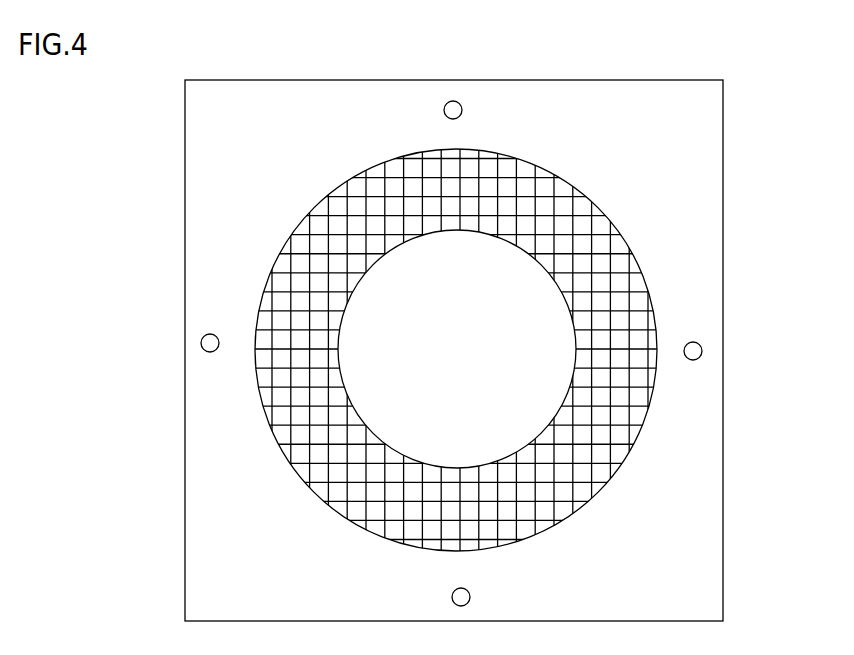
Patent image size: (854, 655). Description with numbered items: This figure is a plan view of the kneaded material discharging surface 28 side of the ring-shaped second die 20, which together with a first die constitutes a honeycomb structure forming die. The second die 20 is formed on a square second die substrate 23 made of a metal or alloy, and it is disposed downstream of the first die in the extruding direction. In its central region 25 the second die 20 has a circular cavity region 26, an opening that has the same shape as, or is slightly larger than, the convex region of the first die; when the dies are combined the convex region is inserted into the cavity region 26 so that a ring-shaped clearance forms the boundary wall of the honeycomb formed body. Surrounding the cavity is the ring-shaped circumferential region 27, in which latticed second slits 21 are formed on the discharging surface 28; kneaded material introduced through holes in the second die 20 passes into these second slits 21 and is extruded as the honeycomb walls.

The second die 20 is at (788, 33).
The second slit 21 is at (593, 452).
The second die substrate 23 is at (667, 187).
The central region 25 is at (377, 312).
The cavity region 26 is at (508, 262).
The circumferential region 27 is at (300, 332).
The kneaded material discharging surface 28 is at (358, 228).